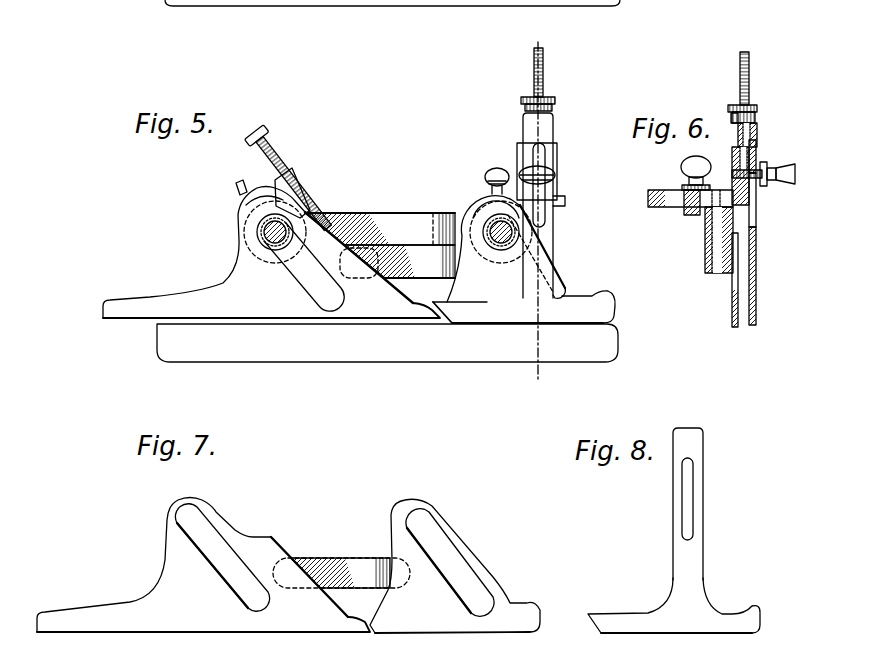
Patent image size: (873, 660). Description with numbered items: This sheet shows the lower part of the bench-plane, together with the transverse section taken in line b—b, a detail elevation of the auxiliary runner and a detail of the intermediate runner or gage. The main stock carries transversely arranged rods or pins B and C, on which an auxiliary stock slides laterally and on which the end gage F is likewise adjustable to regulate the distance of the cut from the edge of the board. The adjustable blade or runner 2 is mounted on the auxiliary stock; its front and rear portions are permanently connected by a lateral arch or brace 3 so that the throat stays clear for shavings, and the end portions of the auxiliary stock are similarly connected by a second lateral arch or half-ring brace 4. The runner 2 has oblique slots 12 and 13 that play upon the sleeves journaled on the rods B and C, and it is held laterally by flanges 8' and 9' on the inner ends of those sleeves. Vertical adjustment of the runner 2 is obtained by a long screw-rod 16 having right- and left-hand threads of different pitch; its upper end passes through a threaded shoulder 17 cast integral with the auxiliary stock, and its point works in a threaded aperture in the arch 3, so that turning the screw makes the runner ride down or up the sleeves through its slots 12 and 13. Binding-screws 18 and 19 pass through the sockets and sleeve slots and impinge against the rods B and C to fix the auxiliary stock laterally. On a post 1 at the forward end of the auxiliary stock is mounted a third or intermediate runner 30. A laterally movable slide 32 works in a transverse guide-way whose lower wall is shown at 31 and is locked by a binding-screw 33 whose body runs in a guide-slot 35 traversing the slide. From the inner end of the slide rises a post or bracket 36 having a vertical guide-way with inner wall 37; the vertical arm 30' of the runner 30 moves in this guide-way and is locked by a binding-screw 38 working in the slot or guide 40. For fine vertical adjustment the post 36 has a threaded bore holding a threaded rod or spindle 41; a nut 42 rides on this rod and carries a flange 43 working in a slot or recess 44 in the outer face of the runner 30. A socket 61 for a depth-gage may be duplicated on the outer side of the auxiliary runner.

In FIG. 5, the post 1 is at (560, 203).
In FIG. 5, the adjustable blade or runner 2 is at (317, 253).
In FIG. 6, the adjustable blade or runner 2 is at (733, 303).
In FIG. 7, the adjustable blade or runner 2 is at (288, 566).
In FIG. 5, the lateral arch or brace 3 is at (399, 261).
In FIG. 7, the lateral arch or brace 3 is at (348, 568).
In FIG. 5, the second lateral arch or half-ring brace 4 is at (380, 229).
In FIG. 5, the flange 8' is at (264, 251).
In FIG. 5, the flange 9' is at (500, 257).
In FIG. 5, the oblique slot 12 is at (565, 288).
In FIG. 7, the oblique slot 12 is at (455, 558).
In FIG. 5, the oblique slot 13 is at (303, 270).
In FIG. 7, the oblique slot 13 is at (213, 550).
In FIG. 5, the screw-rod 16 is at (277, 157).
In FIG. 5, the threaded shoulder 17 is at (296, 170).
In FIG. 5, the binding-screw 18 is at (235, 185).
In FIG. 5, the binding-screw 19 is at (497, 175).
In FIG. 5, the intermediate blade or runner 30 is at (524, 320).
In FIG. 6, the intermediate blade or runner 30 is at (767, 276).
In FIG. 8, the intermediate blade or runner 30 is at (674, 601).
In FIG. 5, the vertical arm of the intermediate runner 30' is at (520, 205).
In FIG. 6, the vertical arm of the intermediate runner 30' is at (772, 147).
In FIG. 8, the vertical arm of the intermediate runner 30' is at (711, 504).
In FIG. 6, the lower wall of transverse guide-way 31 is at (688, 205).
In FIG. 6, the laterally-movable slide 32 is at (655, 196).
In FIG. 6, the binding-screw 33 is at (694, 160).
In FIG. 6, the guide-slot 35 is at (712, 190).
In FIG. 5, the post or bracket 36 is at (556, 152).
In FIG. 6, the post or bracket 36 is at (756, 178).
In FIG. 6, the inner wall of vertical guideway 37 is at (755, 162).
In FIG. 5, the binding-screw 38 is at (553, 174).
In FIG. 6, the binding-screw 38 is at (790, 172).
In FIG. 5, the slot or guide 40 is at (546, 220).
In FIG. 6, the slot or guide 40 is at (757, 206).
In FIG. 8, the slot or guide 40 is at (690, 490).
In FIG. 5, the threaded rod or spindle 41 is at (543, 75).
In FIG. 6, the threaded rod or spindle 41 is at (752, 78).
In FIG. 5, the nut 42 is at (553, 100).
In FIG. 6, the nut 42 is at (758, 106).
In FIG. 6, the flange 43 is at (735, 118).
In FIG. 6, the slot or recess 44 is at (758, 124).
In FIG. 6, the socket for the depth-gage 61 is at (705, 255).
In FIG. 5, the rod or pin B is at (268, 232).
In FIG. 5, the rod or pin C is at (490, 243).
In FIG. 5, the end gage F is at (387, 343).
In FIG. 5, the section line b— b is at (538, 210).